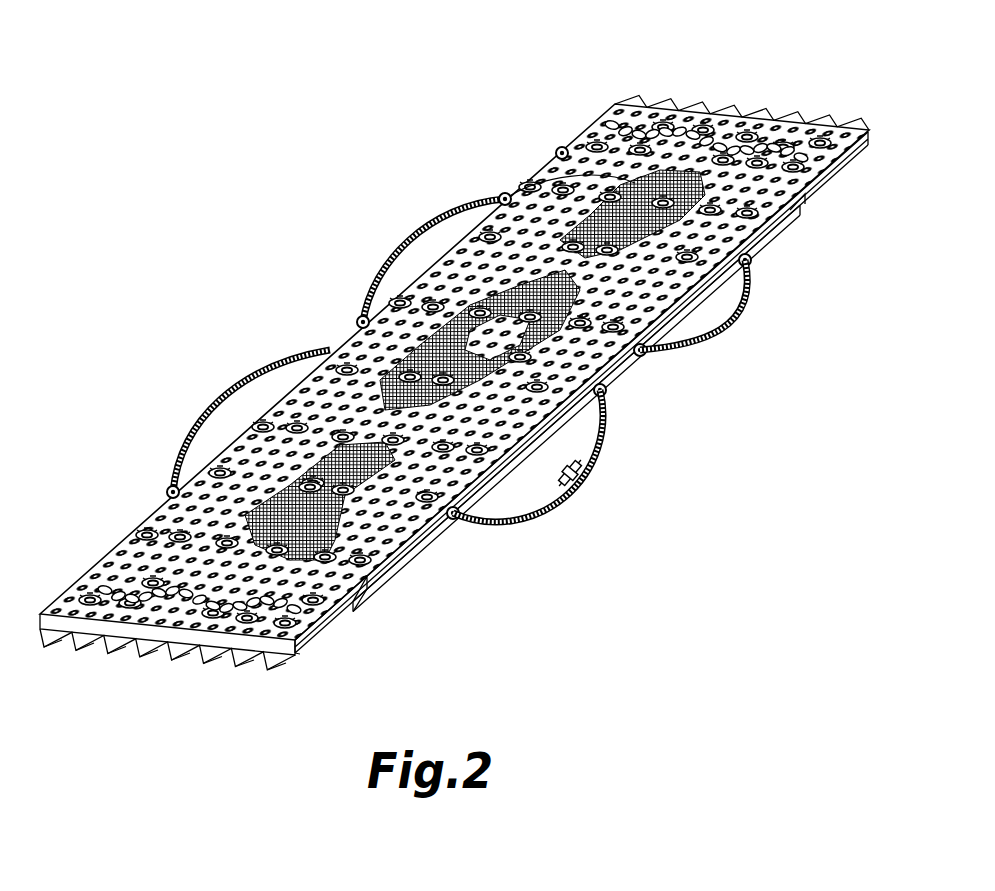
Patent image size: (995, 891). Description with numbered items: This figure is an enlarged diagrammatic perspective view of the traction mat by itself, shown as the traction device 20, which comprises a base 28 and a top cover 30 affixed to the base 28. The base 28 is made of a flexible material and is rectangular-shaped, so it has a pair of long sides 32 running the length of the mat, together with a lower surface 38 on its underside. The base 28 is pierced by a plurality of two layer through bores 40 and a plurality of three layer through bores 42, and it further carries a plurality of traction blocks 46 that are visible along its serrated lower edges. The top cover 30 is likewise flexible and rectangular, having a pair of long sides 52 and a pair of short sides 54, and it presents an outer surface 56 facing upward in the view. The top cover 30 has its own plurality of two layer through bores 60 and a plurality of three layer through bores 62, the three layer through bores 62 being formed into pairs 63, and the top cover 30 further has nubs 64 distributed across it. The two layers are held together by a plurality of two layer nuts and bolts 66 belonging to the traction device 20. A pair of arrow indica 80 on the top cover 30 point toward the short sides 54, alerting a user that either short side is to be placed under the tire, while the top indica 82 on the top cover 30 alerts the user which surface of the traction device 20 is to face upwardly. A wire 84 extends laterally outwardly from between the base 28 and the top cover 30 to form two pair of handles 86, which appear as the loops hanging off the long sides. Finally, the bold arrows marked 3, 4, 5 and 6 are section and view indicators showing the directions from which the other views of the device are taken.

The traction device 20 is at (243, 103).
The top cover 30 is at (147, 516).
The base 28 is at (442, 543).
The long sides 32 is at (785, 233).
The lower surface 38 is at (332, 632).
The two layer through bores 40 is at (600, 394).
The two layer through bores 60 is at (557, 433).
The three layer through bores 42 is at (475, 338).
The three layer through bores 62 is at (475, 338).
The pairs 63 is at (455, 252).
The traction blocks 46 is at (393, 594).
The long sides 52 is at (362, 323).
The short sides 54 is at (795, 114).
The outer surface 56 is at (604, 127).
The nubs 64 is at (560, 152).
The two layer nuts and bolts 66 is at (219, 466).
The arrow indica 80 is at (548, 176).
The top indica 82 is at (360, 330).
The wire 84 is at (209, 418).
The handles 86 is at (213, 396).
The section view direction 3 is at (492, 155).
The section view direction 4 is at (680, 406).
The section view direction 5 is at (457, 592).
The section view direction 6 is at (143, 682).